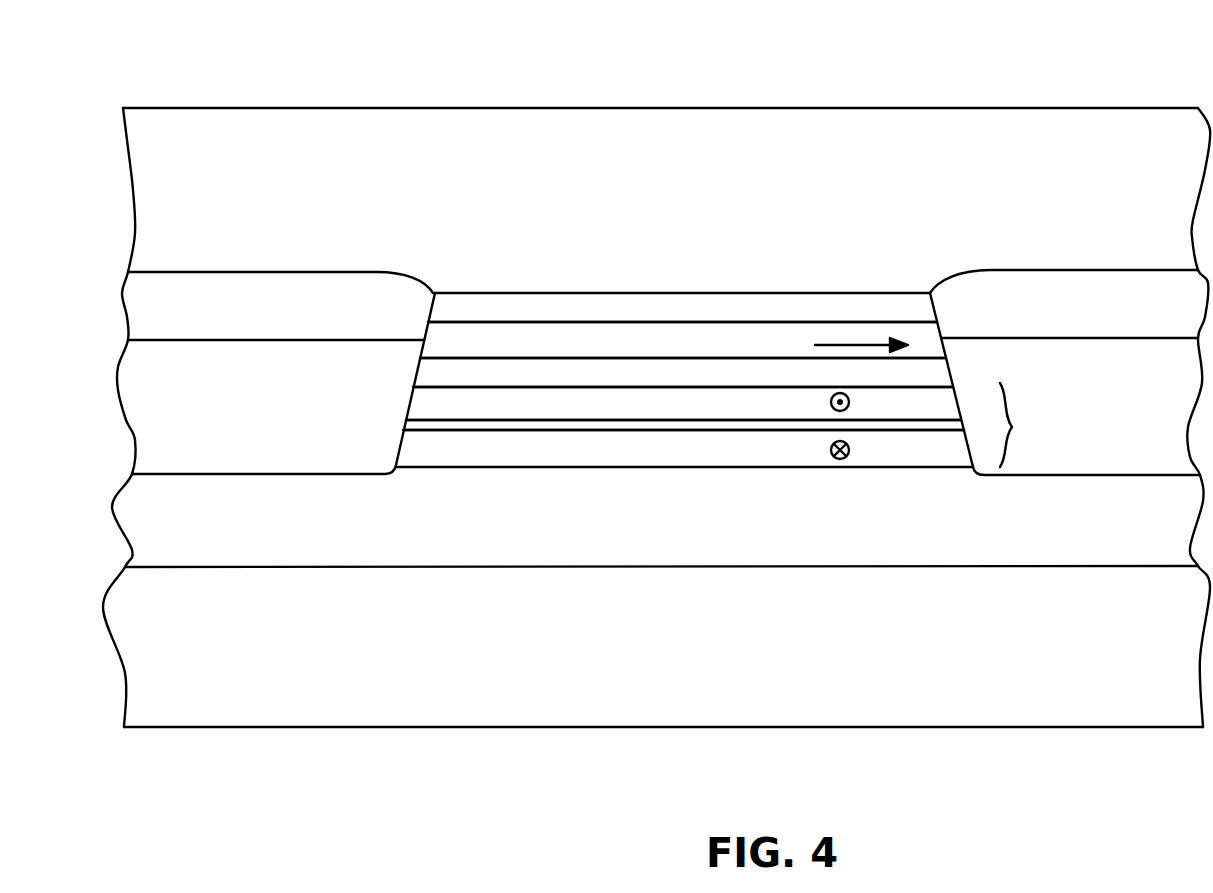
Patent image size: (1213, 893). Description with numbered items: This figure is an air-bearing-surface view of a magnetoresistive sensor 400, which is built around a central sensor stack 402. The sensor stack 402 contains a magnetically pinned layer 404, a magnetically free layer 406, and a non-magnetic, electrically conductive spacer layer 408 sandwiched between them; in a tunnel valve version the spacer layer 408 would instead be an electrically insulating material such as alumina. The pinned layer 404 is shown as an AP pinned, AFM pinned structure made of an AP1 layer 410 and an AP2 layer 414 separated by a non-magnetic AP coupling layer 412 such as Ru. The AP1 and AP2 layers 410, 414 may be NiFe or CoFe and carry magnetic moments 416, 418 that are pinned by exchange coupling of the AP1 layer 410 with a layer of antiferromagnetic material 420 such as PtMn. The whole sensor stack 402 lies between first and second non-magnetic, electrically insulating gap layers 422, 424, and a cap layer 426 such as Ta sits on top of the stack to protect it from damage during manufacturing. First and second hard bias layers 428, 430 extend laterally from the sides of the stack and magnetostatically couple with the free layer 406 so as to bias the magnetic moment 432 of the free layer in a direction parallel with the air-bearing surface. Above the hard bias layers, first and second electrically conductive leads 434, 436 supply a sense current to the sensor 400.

The magnetoresistive sensor 400 is at (720, 105).
The sensor stack 402 is at (415, 383).
The magnetically pinned layer 404 is at (1010, 440).
The magnetically free layer 406 is at (571, 340).
The spacer layer 408 is at (749, 374).
The AP1 layer 410 is at (574, 448).
The AP coupling layer 412 is at (738, 425).
The AP2 layer 414 is at (571, 403).
The magnetic moment of AP1 layer 416 is at (850, 450).
The magnetic moment of AP2 layer 418 is at (850, 402).
The antiferromagnetic material layer 420 is at (746, 515).
The first gap layer 422 is at (746, 635).
The second gap layer 424 is at (750, 201).
The cap layer 426 is at (748, 309).
The first hard bias layer 428 is at (1052, 386).
The second hard bias layer 430 is at (236, 381).
The magnetic moment of free layer 432 is at (842, 339).
The first electrically conductive lead 434 is at (1052, 302).
The second electrically conductive lead 436 is at (248, 303).